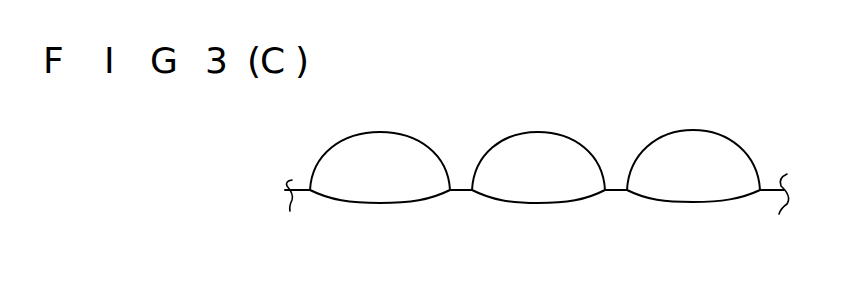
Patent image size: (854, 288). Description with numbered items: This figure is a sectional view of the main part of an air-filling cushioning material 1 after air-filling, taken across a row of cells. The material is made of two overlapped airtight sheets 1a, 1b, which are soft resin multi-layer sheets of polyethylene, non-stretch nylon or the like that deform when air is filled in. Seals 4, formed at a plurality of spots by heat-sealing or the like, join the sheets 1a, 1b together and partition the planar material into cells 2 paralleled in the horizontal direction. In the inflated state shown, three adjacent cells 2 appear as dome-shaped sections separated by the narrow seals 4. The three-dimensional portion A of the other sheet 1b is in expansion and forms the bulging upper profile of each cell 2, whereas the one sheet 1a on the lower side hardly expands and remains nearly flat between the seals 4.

The air-filling cushioning material 1 is at (360, 120).
The cells 2 is at (532, 143).
The seals 4 is at (613, 191).
The three-dimensional portion A is at (707, 145).
The sheet 1a is at (723, 198).
The sheet 1b is at (720, 130).